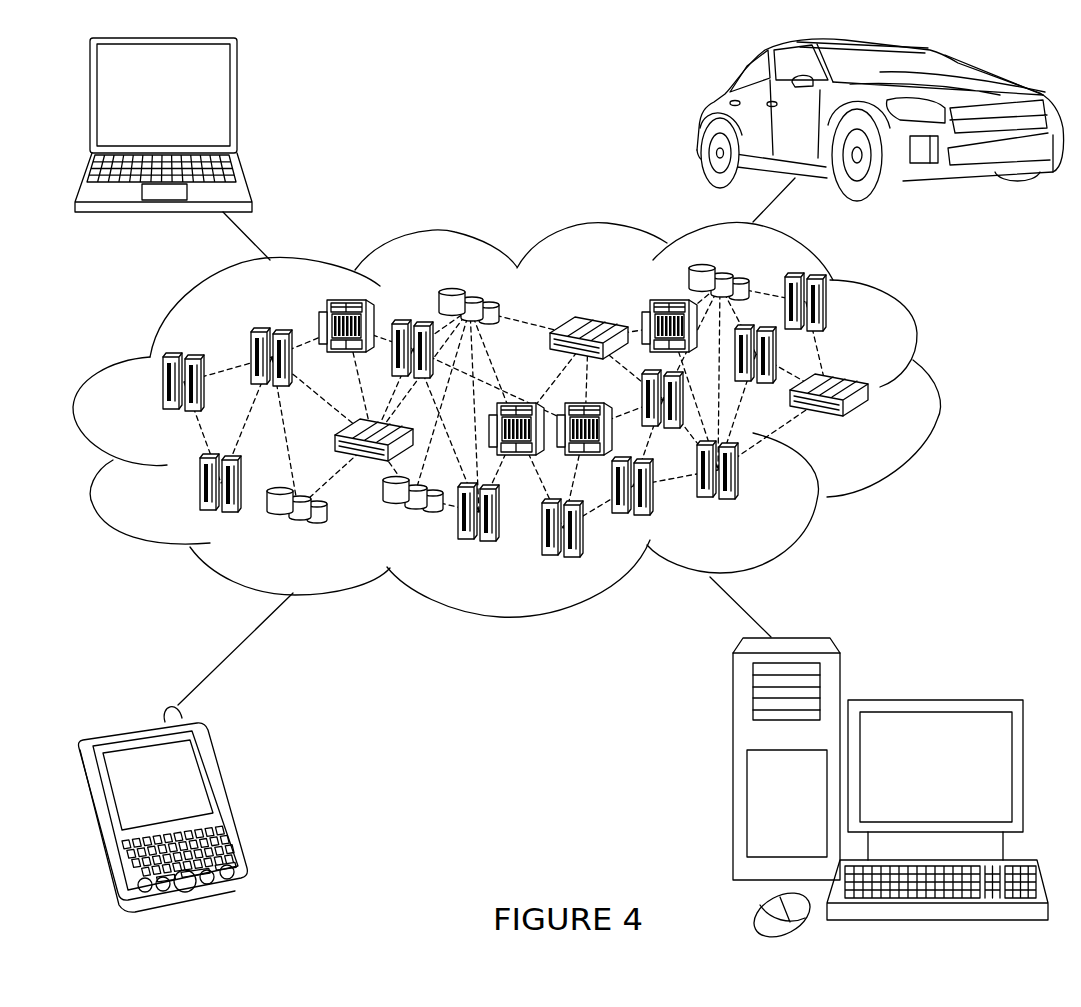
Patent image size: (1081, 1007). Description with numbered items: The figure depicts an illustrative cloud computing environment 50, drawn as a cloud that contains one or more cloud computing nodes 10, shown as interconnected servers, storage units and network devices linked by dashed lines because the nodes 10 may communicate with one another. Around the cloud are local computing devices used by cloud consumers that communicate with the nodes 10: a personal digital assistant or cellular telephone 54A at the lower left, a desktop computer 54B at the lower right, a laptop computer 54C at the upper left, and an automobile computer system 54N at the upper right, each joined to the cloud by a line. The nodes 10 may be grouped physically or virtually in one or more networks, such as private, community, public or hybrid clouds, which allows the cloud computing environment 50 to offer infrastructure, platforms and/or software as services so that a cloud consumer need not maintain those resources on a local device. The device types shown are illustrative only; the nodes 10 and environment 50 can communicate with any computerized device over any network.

The cloud computing nodes 10 is at (870, 423).
The cloud computing environment 50 is at (932, 395).
The personal digital assistant (PDA) or cellular telephone 54A is at (227, 798).
The desktop computer 54B is at (933, 700).
The laptop computer 54C is at (237, 102).
The automobile computer system 54N is at (698, 118).